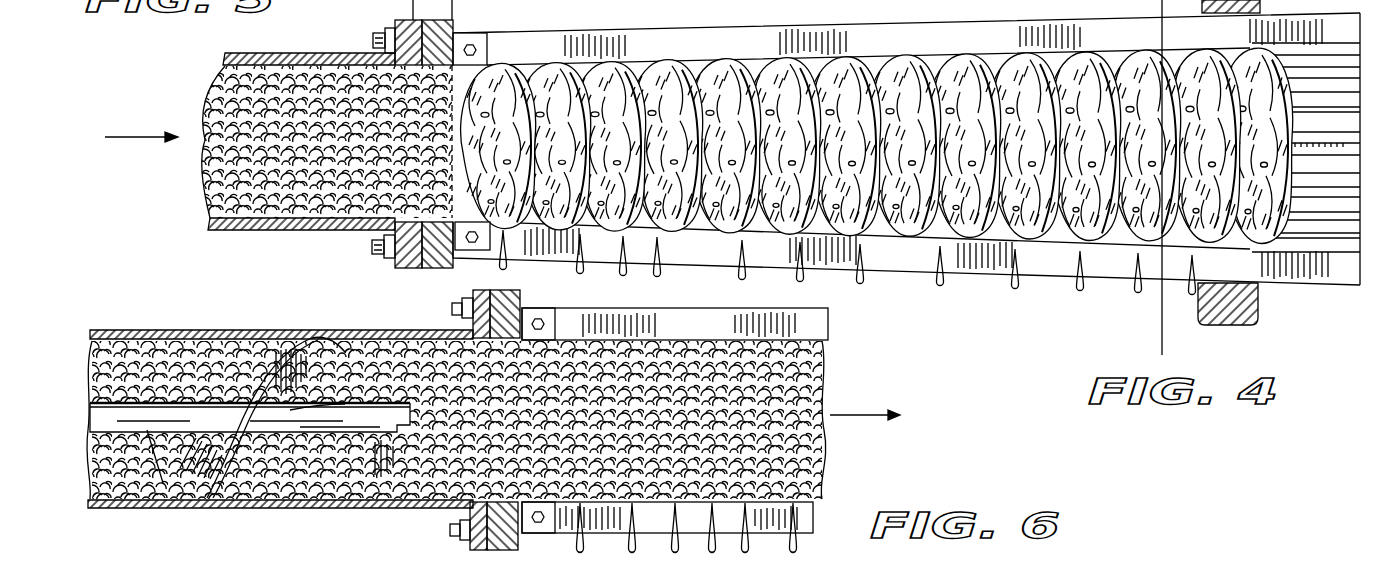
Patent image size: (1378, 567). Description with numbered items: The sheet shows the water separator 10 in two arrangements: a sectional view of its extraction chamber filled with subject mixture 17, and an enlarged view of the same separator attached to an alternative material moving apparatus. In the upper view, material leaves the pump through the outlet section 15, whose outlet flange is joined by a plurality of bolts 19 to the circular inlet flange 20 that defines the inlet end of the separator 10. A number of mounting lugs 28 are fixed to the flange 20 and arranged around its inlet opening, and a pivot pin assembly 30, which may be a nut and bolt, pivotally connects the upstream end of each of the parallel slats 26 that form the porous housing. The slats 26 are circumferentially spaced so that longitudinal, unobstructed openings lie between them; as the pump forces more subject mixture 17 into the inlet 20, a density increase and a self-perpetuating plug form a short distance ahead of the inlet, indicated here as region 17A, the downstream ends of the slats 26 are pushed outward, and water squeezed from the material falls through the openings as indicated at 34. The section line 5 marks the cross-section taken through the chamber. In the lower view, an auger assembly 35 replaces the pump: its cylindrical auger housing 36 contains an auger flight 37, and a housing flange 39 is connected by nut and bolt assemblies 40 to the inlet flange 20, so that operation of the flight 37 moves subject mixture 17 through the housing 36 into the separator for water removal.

In FIG. 4, the section line 5- 5 is at (1198, 340).
In FIG. 4, the liquid or water separator 10 is at (1058, 286).
In FIG. 4, the outlet section 15 is at (318, 232).
In FIG. 4, the subject mixture 17 is at (215, 196).
In FIG. 6, the subject mixture 17 is at (785, 443).
In FIG. 4, the compacted material plug 17A is at (892, 75).
In FIG. 4, the bolts 19 is at (390, 24).
In FIG. 4, the inlet flange 20 is at (408, 144).
In FIG. 6, the inlet flange 20 is at (521, 300).
In FIG. 4, the slats 26 is at (688, 44).
In FIG. 6, the slats 26 is at (805, 323).
In FIG. 4, the mounting lugs 28 is at (474, 33).
In FIG. 6, the mounting lugs 28 is at (521, 546).
In FIG. 4, the pivot pin assembly 30 is at (487, 52).
In FIG. 4, the water falling through the openings 34 is at (655, 265).
In FIG. 6, the auger assembly 35 is at (187, 328).
In FIG. 6, the auger housing 36 is at (237, 336).
In FIG. 6, the auger flight 37 is at (210, 503).
In FIG. 6, the housing flange 39 is at (455, 295).
In FIG. 6, the nut and bolt assemblies 40 is at (450, 530).